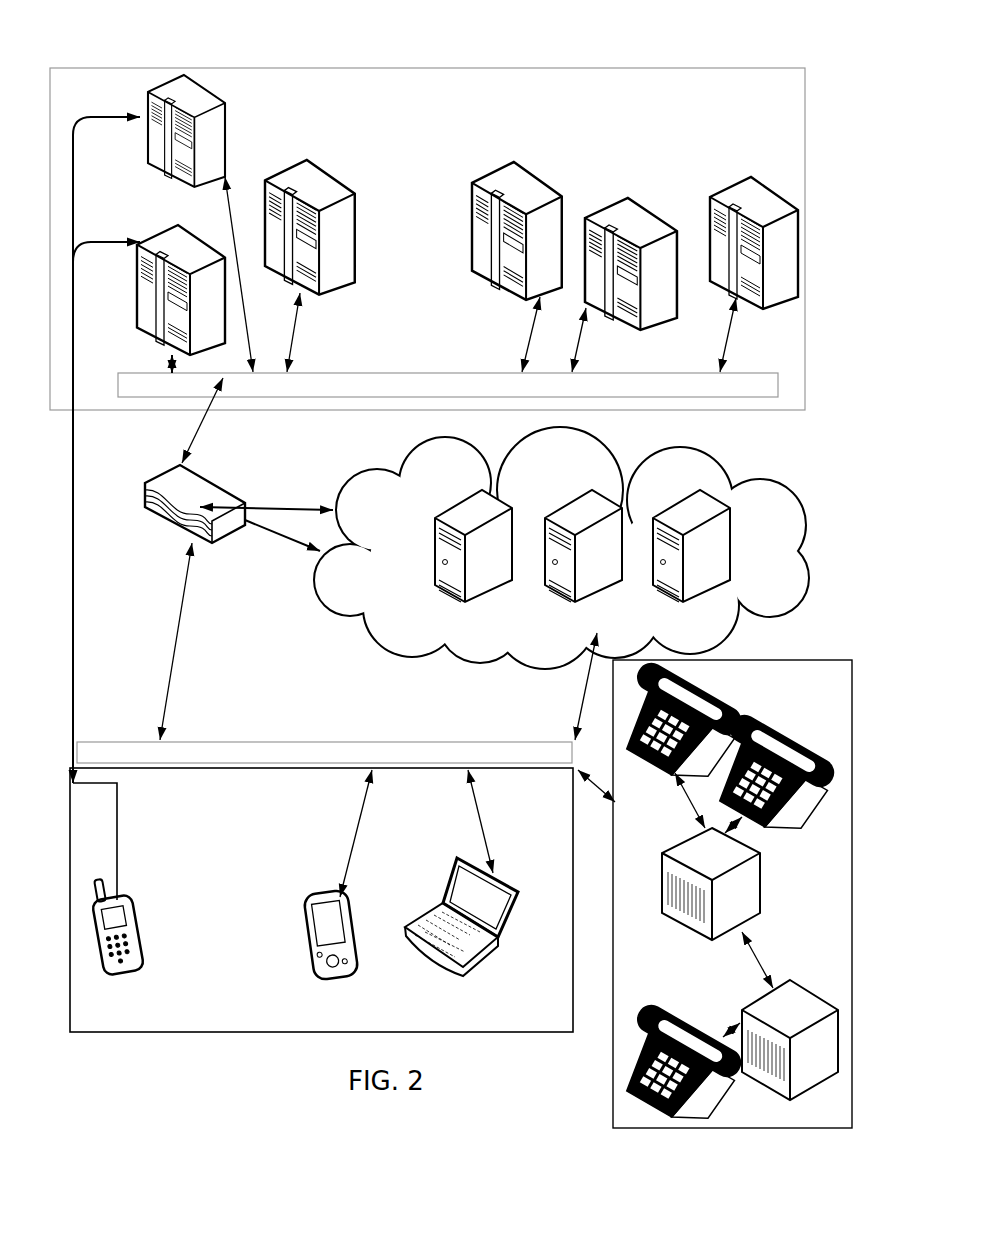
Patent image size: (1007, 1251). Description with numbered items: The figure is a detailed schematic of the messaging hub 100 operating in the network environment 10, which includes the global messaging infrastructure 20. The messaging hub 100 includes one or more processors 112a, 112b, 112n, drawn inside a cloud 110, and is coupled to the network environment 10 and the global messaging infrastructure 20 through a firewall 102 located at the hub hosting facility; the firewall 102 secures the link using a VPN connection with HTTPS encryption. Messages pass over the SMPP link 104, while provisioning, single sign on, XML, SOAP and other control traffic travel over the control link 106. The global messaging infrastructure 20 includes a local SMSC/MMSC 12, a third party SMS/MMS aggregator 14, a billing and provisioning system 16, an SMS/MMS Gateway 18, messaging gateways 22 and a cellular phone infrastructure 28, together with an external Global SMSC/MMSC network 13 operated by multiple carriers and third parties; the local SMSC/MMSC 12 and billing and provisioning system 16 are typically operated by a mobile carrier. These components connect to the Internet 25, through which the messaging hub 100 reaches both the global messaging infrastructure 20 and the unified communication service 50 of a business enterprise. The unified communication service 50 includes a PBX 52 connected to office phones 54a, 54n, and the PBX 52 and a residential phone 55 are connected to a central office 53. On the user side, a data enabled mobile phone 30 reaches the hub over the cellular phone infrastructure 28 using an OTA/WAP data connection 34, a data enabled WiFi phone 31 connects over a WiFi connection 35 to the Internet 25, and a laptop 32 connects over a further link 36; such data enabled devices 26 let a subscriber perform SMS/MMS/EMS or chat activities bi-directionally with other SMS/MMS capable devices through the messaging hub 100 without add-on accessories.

The network environment 10 is at (118, 55).
The local SMSC/MMSC 12 is at (195, 256).
The Global SMSC/MMSC network 13 is at (195, 106).
The third party SMS/MMS aggregator 14 is at (319, 198).
The billing and provisioning system 16 is at (767, 216).
The SMS/MMS Gateway 18 is at (531, 201).
The global messaging infrastructure 20 is at (444, 353).
The messaging gateways 22 is at (644, 236).
The Internet 25 is at (442, 395).
The data enabled device 26 is at (342, 1010).
The cellular phone infrastructure 28 is at (70, 607).
The data enabled mobile phone 30 is at (135, 900).
The data enabled WiFi phone 31 is at (347, 898).
The laptop computer 32 is at (495, 873).
The OTA/WAP link 34 is at (118, 793).
The WiFi link 35 is at (367, 798).
The Internet link to laptop 36 is at (480, 795).
The unified communication service 50 is at (651, 826).
The PBX 52 is at (751, 906).
The central office 53 is at (826, 1053).
The office phone 54a is at (718, 683).
The office phone 54n is at (778, 722).
The residential phone 55 is at (660, 1000).
The messaging hub 100 is at (380, 663).
The firewall 102 is at (213, 496).
The SMPP link 104 is at (305, 508).
The control link 106 is at (290, 547).
The network cloud 110 is at (421, 623).
The processor 112a is at (505, 563).
The processor 112b is at (619, 563).
The processor 112n is at (725, 563).